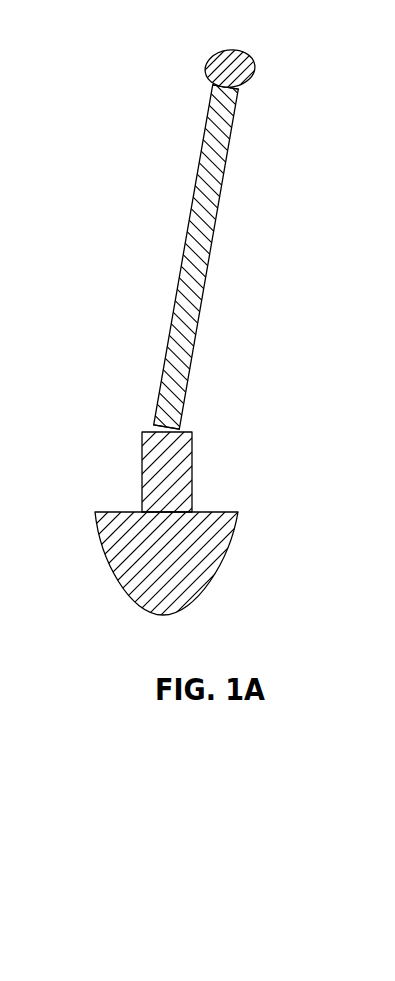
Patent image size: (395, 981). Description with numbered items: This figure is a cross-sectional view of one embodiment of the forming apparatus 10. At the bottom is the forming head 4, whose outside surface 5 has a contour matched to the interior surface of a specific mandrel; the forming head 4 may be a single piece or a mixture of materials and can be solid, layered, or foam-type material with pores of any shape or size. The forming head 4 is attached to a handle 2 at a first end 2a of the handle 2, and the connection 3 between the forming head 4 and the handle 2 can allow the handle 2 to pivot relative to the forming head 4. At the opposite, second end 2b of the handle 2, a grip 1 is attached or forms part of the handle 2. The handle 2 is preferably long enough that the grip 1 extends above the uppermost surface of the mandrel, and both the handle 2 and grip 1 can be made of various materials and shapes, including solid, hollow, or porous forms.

The forming apparatus 10 is at (108, 164).
The grip 1 is at (233, 68).
The handle 2 is at (195, 260).
The first end 2a is at (157, 407).
The second end 2b is at (233, 88).
The connection 3 is at (168, 428).
The forming head 4 is at (190, 523).
The outside surface 5 is at (213, 578).